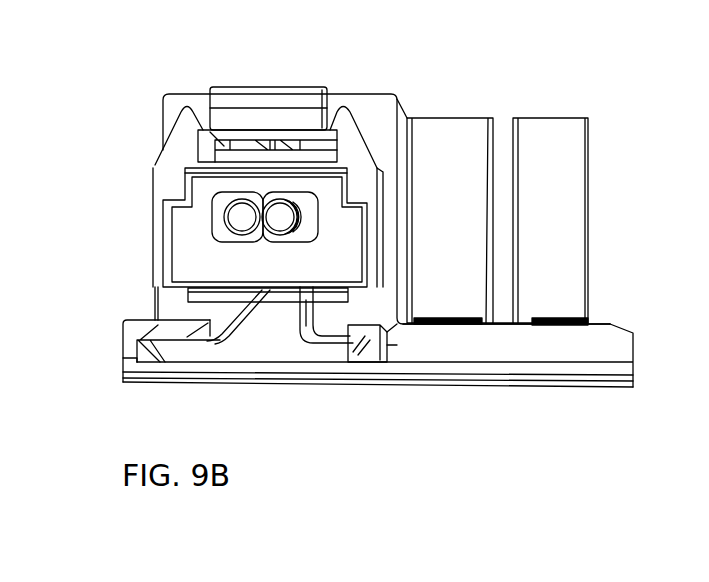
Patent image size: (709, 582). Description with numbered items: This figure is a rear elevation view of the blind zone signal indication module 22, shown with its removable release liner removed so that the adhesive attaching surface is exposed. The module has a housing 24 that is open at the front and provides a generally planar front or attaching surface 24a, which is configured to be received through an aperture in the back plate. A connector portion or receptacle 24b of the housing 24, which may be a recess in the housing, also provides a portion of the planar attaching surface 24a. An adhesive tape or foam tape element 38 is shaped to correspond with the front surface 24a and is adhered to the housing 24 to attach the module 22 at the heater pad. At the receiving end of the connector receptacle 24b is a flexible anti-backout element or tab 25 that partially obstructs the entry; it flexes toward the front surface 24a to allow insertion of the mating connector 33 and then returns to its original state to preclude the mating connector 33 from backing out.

The signal indication module 22 is at (470, 70).
The housing 24 is at (580, 170).
The front or attaching surface 24a is at (632, 373).
The connector portion or receptacle 24b is at (177, 110).
The anti-backout element or tab 25 is at (288, 358).
The mating connector 33 is at (350, 133).
The adhesive tape or foam tape element 38 is at (553, 383).